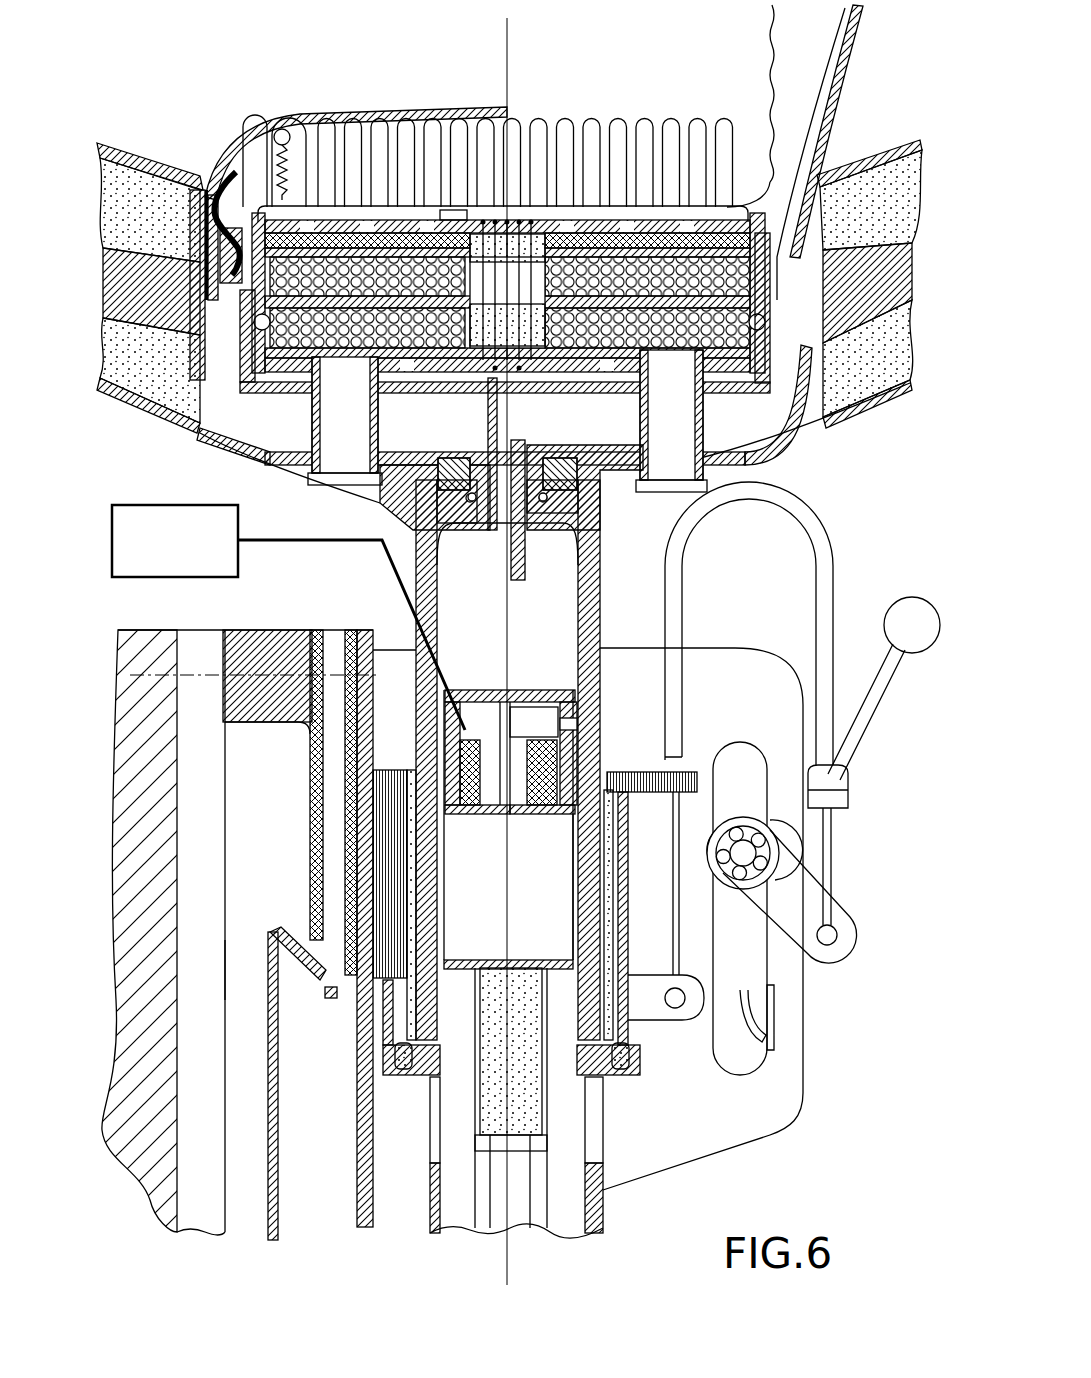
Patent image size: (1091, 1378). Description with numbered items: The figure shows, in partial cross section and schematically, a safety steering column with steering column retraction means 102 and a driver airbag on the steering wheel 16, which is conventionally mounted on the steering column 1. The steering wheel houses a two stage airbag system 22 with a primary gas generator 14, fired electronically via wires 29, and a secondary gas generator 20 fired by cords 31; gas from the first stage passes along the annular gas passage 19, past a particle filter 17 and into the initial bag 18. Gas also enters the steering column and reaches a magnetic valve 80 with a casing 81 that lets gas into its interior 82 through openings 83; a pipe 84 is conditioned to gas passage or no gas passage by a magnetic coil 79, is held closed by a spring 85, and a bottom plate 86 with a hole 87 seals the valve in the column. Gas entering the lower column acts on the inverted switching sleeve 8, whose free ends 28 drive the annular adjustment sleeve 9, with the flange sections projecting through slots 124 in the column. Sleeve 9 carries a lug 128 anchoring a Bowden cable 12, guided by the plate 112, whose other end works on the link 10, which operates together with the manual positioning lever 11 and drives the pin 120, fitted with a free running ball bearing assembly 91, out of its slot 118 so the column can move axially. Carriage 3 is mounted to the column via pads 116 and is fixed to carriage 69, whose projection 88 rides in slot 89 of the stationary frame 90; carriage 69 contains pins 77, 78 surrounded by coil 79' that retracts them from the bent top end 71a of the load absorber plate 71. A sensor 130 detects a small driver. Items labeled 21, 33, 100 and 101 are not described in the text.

The steering column 1 is at (605, 1205).
The carriage 3 is at (392, 770).
The switching sleeve 8 is at (440, 1073).
The adjustment sleeve 9 is at (405, 1072).
The link 10 is at (838, 952).
The manual positioning lever 11 is at (870, 668).
The Bowden cable 12 is at (772, 500).
The primary gas generator 14 is at (397, 323).
The steering wheel 16 is at (893, 147).
The particle filter 17 is at (420, 220).
The initial bag 18 is at (585, 128).
The annular gas passage 19 is at (760, 367).
The secondary gas generator 20 is at (275, 217).
The cavity 21 is at (268, 766).
The driver airbag 22 is at (396, 142).
The free ends of the switching sleeve 28 is at (395, 1055).
The electrical connections 29 is at (527, 410).
The cords 31 is at (283, 130).
The slot 33 is at (716, 738).
The carriage 69 is at (357, 632).
The load absorber metal plate 71 is at (278, 1222).
The bent top end 71a is at (262, 968).
The pin 77 is at (332, 1017).
The pin 78 is at (331, 998).
The magnetic coil 79 is at (517, 622).
The coil 79' is at (285, 785).
The magnetic valve 80 is at (488, 672).
The casing 81 is at (452, 697).
The interior 82 is at (535, 715).
The openings 83 is at (563, 725).
The pipe 84 is at (460, 815).
The spring 85 is at (541, 815).
The bottom plate 86 is at (530, 817).
The hole 87 is at (500, 816).
The projection 88 is at (250, 698).
The slot 89 is at (203, 1013).
The stationary frame 90 is at (135, 1100).
The ball bearing assembly 91 is at (835, 830).
The valve assembly 100 is at (152, 457).
The stator assembly 101 is at (228, 66).
The steering column retraction means 102 is at (252, 845).
The plate 112 is at (795, 1125).
The pads 116 is at (600, 848).
The slot 118 is at (740, 988).
The pin 120 is at (733, 855).
The slots 124 is at (600, 1150).
The lug 128 is at (690, 1012).
The sensor 130 is at (112, 547).